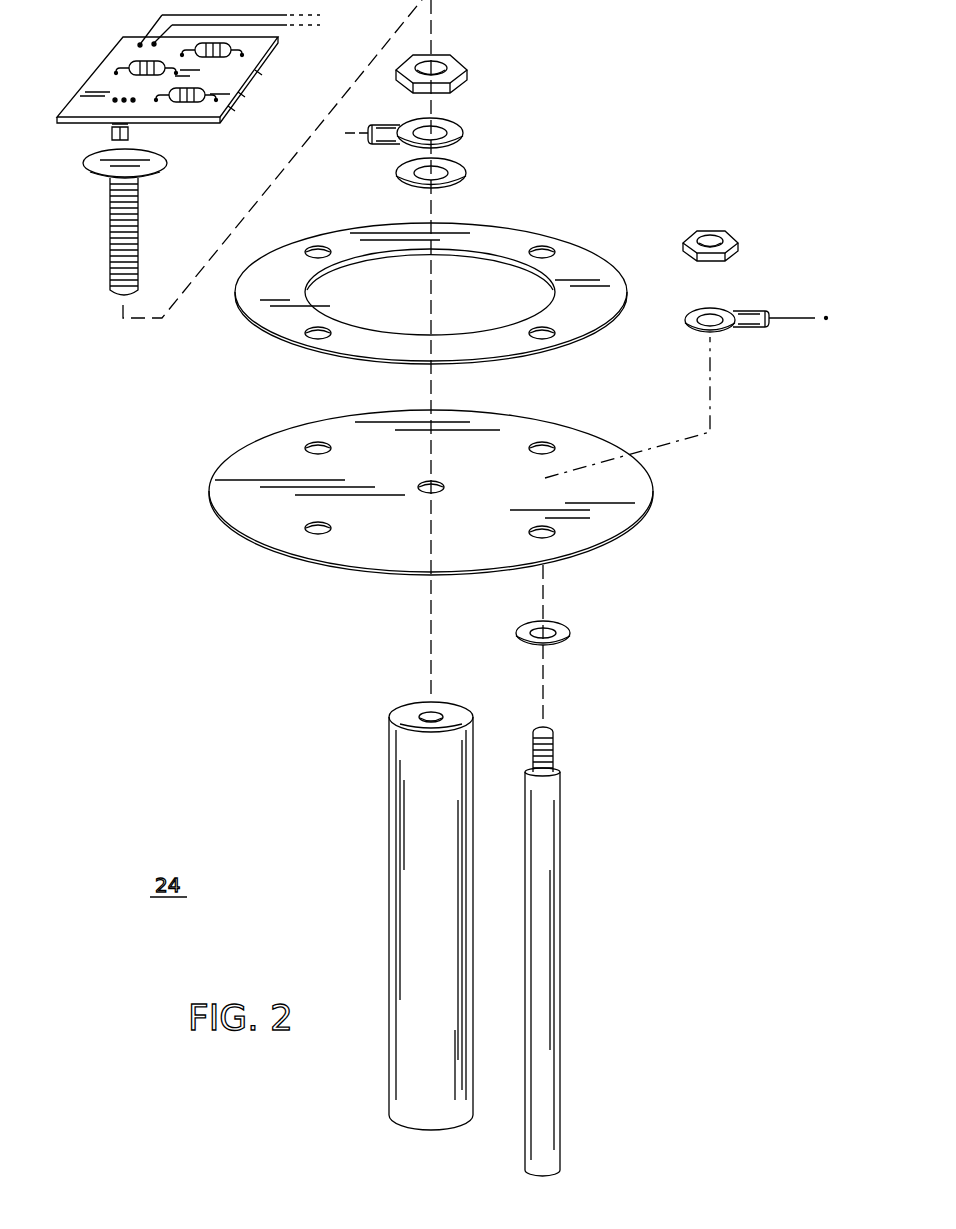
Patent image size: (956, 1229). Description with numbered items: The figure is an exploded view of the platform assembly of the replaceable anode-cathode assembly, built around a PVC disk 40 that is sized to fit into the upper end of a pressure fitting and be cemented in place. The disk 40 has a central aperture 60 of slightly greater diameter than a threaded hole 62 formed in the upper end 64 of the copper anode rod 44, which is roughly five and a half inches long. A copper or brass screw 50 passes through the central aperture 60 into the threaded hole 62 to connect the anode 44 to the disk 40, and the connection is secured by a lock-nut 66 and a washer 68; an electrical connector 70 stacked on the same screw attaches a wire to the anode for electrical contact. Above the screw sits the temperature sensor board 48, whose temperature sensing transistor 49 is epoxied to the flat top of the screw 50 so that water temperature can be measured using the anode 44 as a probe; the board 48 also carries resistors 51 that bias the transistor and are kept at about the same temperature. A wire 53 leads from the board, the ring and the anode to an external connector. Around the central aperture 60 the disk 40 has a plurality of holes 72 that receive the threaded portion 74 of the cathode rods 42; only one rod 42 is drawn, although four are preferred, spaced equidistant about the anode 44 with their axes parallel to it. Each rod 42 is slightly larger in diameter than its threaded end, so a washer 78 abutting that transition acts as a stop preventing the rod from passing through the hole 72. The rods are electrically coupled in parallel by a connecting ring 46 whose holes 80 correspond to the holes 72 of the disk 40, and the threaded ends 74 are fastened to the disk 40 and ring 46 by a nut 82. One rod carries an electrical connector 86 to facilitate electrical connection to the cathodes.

The PVC disk 40 is at (650, 520).
The cathode rods 42 is at (563, 840).
The central anode rod 44 is at (385, 889).
The connection ring 46 is at (243, 320).
The temperature sensor board 48 is at (253, 85).
The temperature sensing transistor 49 is at (130, 135).
The screw 50 is at (142, 214).
The resistors 51 is at (137, 62).
The wire 53 is at (150, 17).
The central aperture 60 is at (437, 493).
The threaded hole 62 is at (421, 711).
The upper end 64 is at (395, 712).
The lock-nut 66 is at (468, 75).
The washer 68 is at (470, 173).
The electrical connector 70 is at (465, 136).
The holes 72 is at (310, 446).
The threaded portion 74 is at (557, 745).
The washer 78 is at (575, 635).
The holes 80 is at (320, 250).
The nut 82 is at (745, 236).
The electrical connector 86 is at (748, 333).